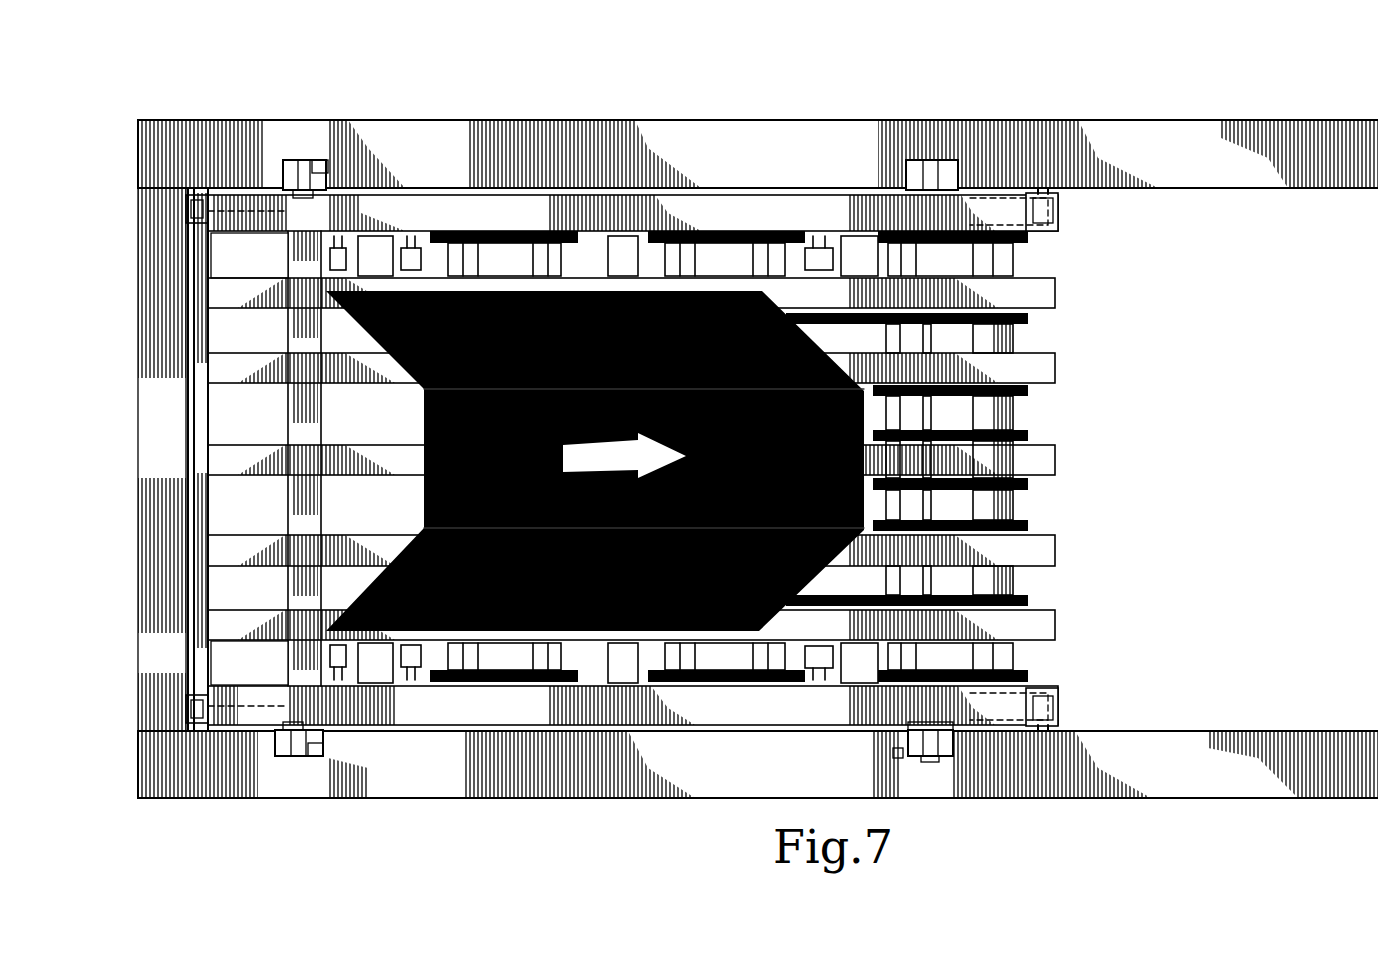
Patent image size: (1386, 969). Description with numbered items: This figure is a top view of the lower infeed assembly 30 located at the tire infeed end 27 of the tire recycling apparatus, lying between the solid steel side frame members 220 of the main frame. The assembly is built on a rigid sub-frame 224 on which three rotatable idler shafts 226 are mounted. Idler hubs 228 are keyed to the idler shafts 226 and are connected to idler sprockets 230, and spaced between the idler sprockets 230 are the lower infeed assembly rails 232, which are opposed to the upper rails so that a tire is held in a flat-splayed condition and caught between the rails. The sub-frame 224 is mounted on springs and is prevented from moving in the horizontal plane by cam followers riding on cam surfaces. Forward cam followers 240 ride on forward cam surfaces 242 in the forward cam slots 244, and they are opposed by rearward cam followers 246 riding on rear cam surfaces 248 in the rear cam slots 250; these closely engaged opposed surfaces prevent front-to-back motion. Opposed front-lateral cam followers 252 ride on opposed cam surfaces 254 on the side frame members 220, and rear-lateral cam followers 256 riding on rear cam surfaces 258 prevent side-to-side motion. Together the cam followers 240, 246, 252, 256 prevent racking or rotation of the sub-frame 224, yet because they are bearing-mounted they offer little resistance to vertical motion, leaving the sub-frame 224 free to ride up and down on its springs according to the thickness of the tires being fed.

The lower infeed assembly 30 is at (985, 80).
The tire infeed end 27 is at (130, 420).
The side frame members 220 is at (447, 157).
The sub-frame 224 is at (1050, 685).
The idler shafts 226 is at (497, 672).
The idler hubs 228 is at (1003, 330).
The idler sprockets 230 is at (1020, 310).
The lower infeed assembly rails 232 is at (1050, 285).
The forward cam followers 240 is at (295, 150).
The forward cam surfaces 242 is at (262, 165).
The forward cam slots 244 is at (318, 150).
The rearward cam followers 246 is at (910, 752).
The rear cam surfaces 248 is at (945, 750).
The rear cam slots 250 is at (893, 745).
The front-lateral cam followers 252 is at (182, 188).
The cam surfaces 254 is at (205, 180).
The rear-lateral cam followers 256 is at (1050, 195).
The rear cam surfaces 258 is at (1030, 180).